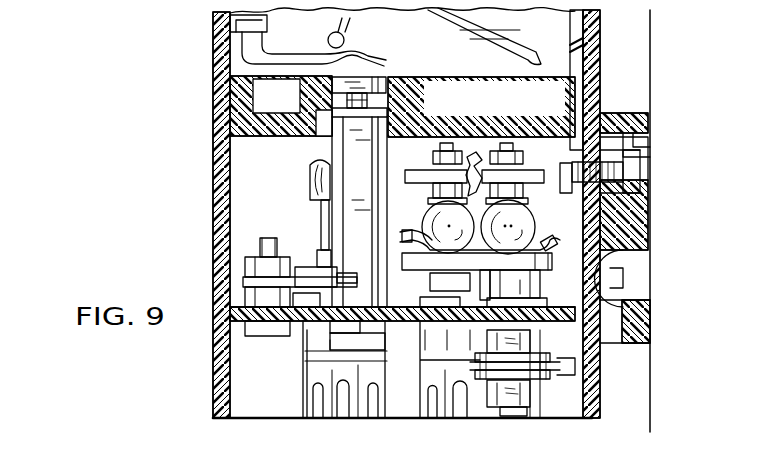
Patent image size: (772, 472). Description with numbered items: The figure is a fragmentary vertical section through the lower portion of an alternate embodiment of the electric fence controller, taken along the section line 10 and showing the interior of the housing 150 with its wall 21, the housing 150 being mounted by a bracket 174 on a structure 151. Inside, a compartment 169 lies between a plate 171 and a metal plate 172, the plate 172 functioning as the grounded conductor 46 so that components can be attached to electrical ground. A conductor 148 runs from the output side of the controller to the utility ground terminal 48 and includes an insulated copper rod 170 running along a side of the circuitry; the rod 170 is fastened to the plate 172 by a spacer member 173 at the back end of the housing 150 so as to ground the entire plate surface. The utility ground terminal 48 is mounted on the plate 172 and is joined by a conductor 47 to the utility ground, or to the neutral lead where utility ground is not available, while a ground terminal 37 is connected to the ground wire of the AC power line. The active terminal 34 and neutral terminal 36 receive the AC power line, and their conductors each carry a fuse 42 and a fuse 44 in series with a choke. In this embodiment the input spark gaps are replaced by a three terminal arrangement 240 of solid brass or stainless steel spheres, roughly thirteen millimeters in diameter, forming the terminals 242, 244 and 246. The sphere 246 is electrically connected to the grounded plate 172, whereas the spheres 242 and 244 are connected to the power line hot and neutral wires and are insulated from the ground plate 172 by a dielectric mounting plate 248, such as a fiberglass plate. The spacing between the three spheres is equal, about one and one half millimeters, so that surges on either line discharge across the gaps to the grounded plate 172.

The section line 10- 10 is at (208, 140).
The housing wall 21 is at (596, 33).
The active terminal 34 is at (452, 143).
The neutral terminal 36 is at (510, 143).
The ground terminal 37 is at (285, 250).
The fuse 42 is at (332, 407).
The fuse 44 is at (447, 408).
The conductor 46 is at (218, 322).
The conductor 47 is at (598, 384).
The utility ground terminal 48 is at (543, 397).
The conductor 148 is at (292, 63).
The housing 150 is at (200, 208).
The structure 151 is at (648, 413).
The compartment 169 is at (248, 210).
The insulated copper rod 170 is at (232, 13).
The plate 171 is at (267, 128).
The metal plate 172 is at (457, 313).
The spacer member 173 is at (348, 340).
The bracket 174 is at (612, 207).
The three terminal arrangement 240 is at (480, 140).
The terminal 242 is at (510, 225).
The terminal 244 is at (432, 217).
The terminal 246 is at (600, 240).
The dielectric mounting plate 248 is at (600, 262).